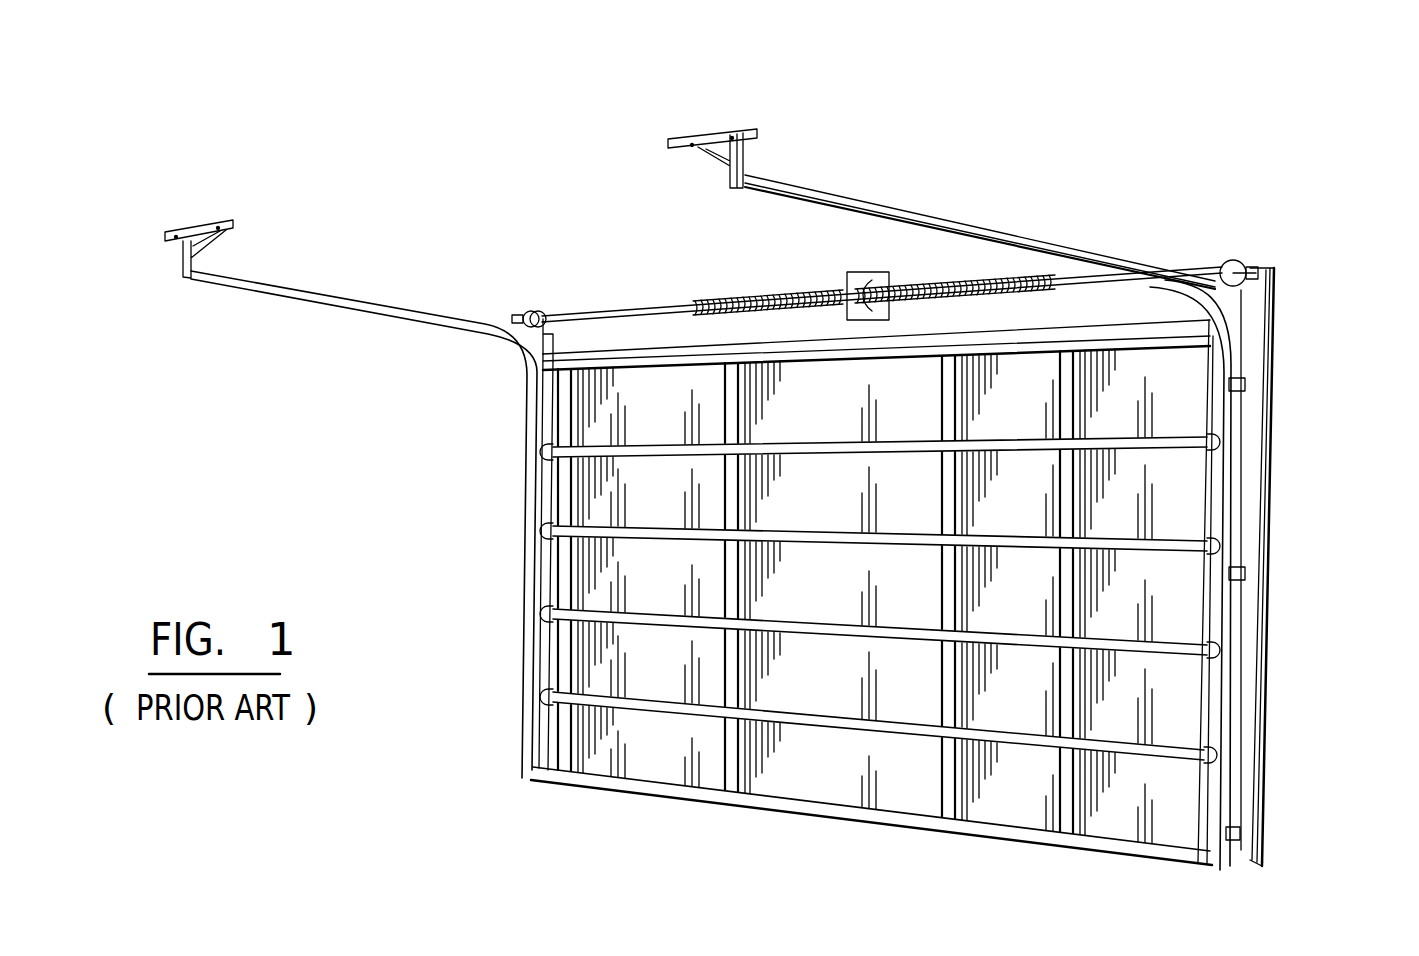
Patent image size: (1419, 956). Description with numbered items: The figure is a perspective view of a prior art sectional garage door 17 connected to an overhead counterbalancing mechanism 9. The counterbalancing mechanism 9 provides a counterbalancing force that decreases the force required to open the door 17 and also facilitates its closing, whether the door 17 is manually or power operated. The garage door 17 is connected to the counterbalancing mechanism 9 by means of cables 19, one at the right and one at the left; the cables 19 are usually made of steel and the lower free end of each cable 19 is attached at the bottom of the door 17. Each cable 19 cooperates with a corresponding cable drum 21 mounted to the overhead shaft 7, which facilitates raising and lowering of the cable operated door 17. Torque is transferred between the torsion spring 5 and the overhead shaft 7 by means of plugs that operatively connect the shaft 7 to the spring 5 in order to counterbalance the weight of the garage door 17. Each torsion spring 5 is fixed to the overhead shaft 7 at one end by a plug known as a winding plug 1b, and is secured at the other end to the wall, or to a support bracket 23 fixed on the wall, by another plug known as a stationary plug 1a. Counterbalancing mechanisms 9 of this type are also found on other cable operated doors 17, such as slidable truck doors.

The stationary plug 1a is at (846, 272).
The winding plug 1b is at (693, 304).
The torsion spring 5 is at (777, 298).
The overhead shaft 7 is at (621, 306).
The counterbalancing mechanism 9 is at (903, 158).
The garage door 17 is at (803, 778).
The cable 19 is at (1244, 548).
The cable drum 21 is at (532, 310).
The support bracket 23 is at (893, 281).